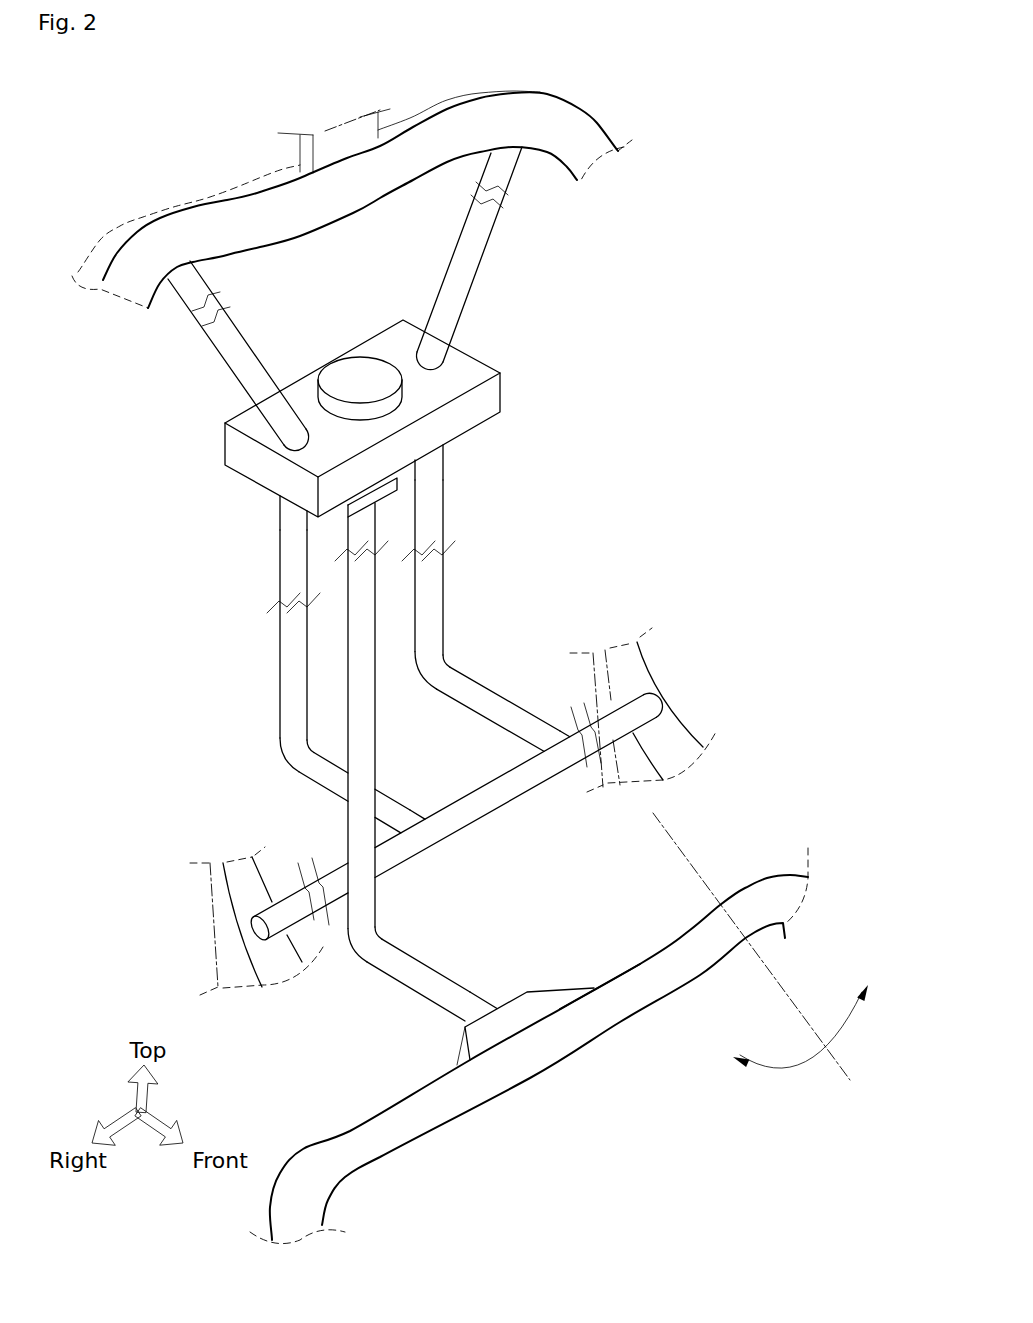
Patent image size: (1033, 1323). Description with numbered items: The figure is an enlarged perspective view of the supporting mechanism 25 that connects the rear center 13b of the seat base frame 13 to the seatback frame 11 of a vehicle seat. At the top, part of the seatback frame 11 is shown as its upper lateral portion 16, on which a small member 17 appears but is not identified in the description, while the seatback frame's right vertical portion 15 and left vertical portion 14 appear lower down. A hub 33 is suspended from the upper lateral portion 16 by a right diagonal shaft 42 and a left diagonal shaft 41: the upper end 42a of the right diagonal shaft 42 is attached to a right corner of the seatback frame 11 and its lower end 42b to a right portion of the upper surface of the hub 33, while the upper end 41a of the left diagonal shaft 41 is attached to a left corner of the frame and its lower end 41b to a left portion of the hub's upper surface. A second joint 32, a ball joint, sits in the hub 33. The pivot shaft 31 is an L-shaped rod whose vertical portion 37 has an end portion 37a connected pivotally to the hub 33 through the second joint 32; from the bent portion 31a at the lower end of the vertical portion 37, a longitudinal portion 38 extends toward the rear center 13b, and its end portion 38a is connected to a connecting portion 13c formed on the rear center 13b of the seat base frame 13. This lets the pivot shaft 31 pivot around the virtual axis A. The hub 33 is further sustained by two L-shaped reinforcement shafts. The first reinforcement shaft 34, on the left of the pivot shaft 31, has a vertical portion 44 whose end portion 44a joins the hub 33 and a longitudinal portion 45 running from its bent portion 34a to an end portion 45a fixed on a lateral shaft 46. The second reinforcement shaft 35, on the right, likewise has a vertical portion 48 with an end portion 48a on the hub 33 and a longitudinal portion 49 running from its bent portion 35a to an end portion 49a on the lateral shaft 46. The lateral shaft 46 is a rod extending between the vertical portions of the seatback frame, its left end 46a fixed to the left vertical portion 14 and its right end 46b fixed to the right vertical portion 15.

The seatback frame 11 is at (575, 96).
The seat base frame 13 is at (529, 1020).
The rear center 13b is at (653, 955).
The connecting portion 13c is at (532, 1000).
The left vertical portion 14 is at (635, 662).
The right vertical portion 15 is at (240, 887).
The upper lateral portion 16 is at (237, 198).
The bracket 17 is at (330, 136).
The supporting mechanism 25 is at (450, 668).
The pivot shaft 31 is at (383, 735).
The bent portion 31a is at (363, 928).
The second joint 32 is at (338, 353).
The hub 33 is at (485, 352).
The first reinforcement shaft 34 is at (486, 589).
The bent portion 34a is at (437, 643).
The second reinforcement shaft 35 is at (313, 659).
The bent portion 35a is at (285, 741).
The vertical portion 37 is at (373, 768).
The end portion 37a is at (363, 518).
The longitudinal portion 38 is at (422, 972).
The end portion 38a is at (457, 997).
The left diagonal shaft 41 is at (484, 258).
The upper end 41a is at (503, 162).
The lower end 41b is at (422, 338).
The right diagonal shaft 42 is at (220, 352).
The upper end 42a is at (200, 277).
The lower end 42b is at (280, 419).
The vertical portion 44 is at (437, 573).
The end portion 44a is at (450, 447).
The longitudinal portion 45 is at (485, 690).
The end portion 45a is at (523, 743).
The lateral shaft 46 is at (450, 816).
The left end 46a is at (640, 708).
The right end 46b is at (257, 930).
The vertical portion 48 is at (293, 674).
The end portion 48a is at (286, 513).
The longitudinal portion 49 is at (333, 777).
The end portion 49a is at (402, 807).
The virtual axis A is at (762, 963).